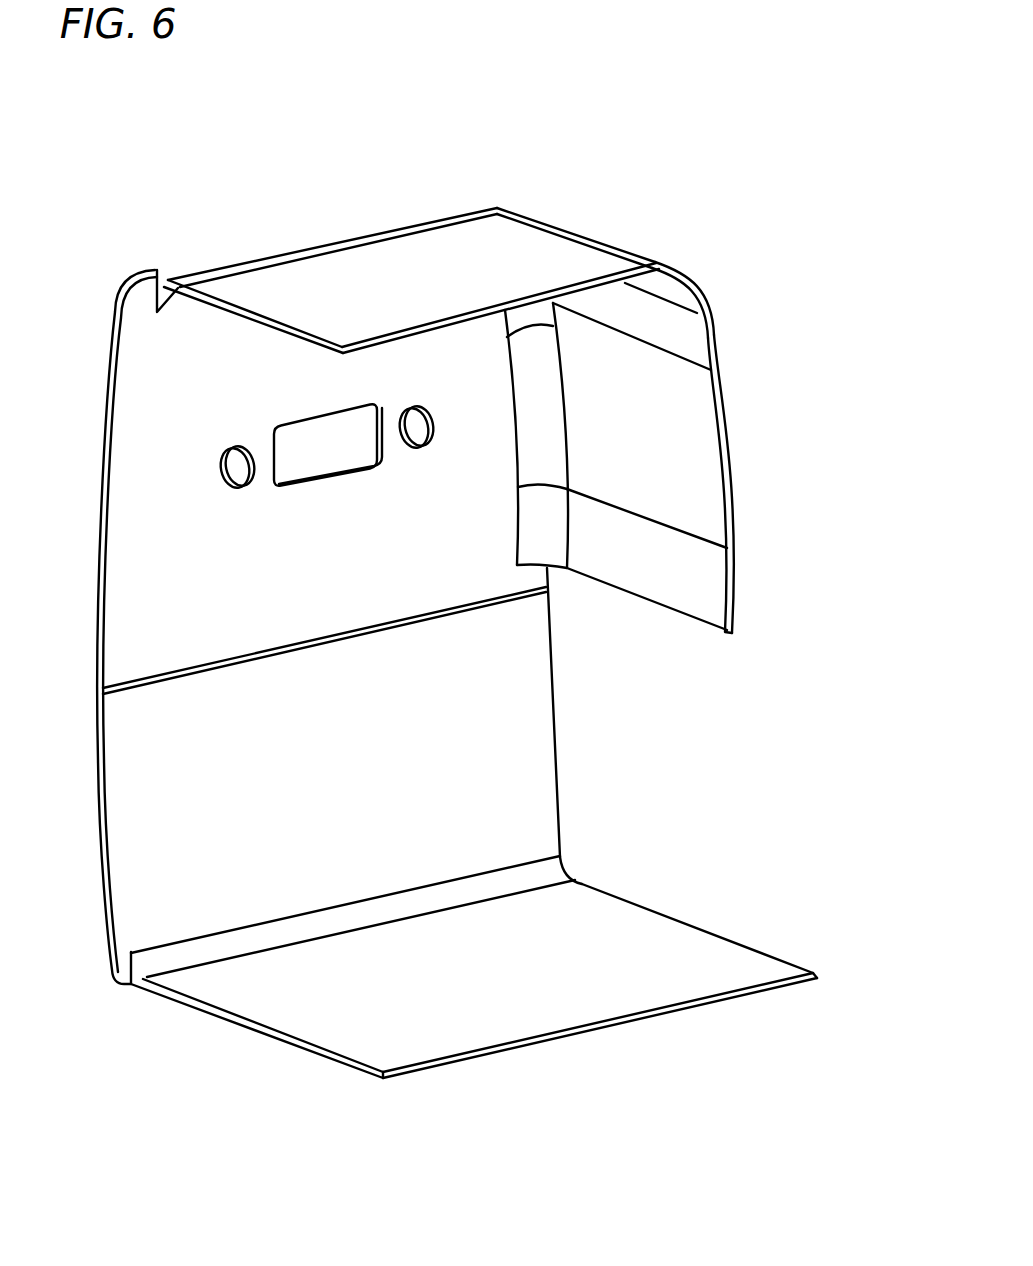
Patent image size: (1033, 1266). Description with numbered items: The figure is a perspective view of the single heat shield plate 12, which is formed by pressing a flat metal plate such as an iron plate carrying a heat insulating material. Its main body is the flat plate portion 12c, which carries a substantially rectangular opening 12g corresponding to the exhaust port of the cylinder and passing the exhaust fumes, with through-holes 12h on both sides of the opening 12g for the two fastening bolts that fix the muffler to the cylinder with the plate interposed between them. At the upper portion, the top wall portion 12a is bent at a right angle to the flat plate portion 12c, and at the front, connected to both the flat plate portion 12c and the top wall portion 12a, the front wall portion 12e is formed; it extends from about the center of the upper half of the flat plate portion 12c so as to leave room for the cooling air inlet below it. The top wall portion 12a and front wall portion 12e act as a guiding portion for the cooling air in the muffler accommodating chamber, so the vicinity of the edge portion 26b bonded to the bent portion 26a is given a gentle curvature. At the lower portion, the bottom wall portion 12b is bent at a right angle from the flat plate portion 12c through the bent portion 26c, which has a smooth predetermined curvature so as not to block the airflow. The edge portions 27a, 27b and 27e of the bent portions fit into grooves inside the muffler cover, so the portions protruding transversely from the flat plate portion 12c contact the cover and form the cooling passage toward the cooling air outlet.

The heat shield plate 12 is at (632, 140).
The top wall portion 12a is at (374, 266).
The bottom wall portion 12b is at (523, 992).
The flat plate portion 12c is at (329, 582).
The front wall portion 12e is at (652, 436).
The opening 12g is at (301, 488).
The through-holes 12h is at (419, 411).
The bent portion 26a is at (541, 435).
The edge portion 26b is at (694, 261).
The bent portion 26c is at (545, 871).
The edge portion 27a is at (463, 327).
The edge portion 27b is at (649, 1026).
The edge portion 27e is at (741, 474).